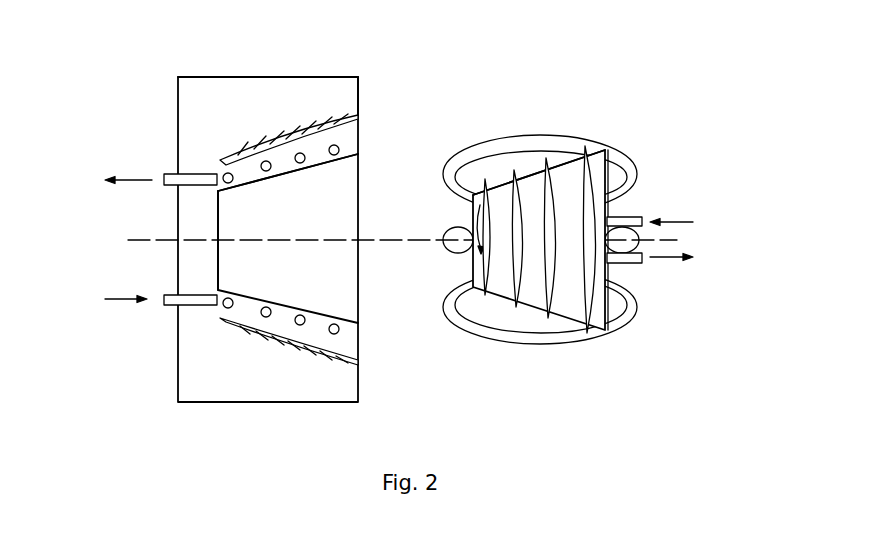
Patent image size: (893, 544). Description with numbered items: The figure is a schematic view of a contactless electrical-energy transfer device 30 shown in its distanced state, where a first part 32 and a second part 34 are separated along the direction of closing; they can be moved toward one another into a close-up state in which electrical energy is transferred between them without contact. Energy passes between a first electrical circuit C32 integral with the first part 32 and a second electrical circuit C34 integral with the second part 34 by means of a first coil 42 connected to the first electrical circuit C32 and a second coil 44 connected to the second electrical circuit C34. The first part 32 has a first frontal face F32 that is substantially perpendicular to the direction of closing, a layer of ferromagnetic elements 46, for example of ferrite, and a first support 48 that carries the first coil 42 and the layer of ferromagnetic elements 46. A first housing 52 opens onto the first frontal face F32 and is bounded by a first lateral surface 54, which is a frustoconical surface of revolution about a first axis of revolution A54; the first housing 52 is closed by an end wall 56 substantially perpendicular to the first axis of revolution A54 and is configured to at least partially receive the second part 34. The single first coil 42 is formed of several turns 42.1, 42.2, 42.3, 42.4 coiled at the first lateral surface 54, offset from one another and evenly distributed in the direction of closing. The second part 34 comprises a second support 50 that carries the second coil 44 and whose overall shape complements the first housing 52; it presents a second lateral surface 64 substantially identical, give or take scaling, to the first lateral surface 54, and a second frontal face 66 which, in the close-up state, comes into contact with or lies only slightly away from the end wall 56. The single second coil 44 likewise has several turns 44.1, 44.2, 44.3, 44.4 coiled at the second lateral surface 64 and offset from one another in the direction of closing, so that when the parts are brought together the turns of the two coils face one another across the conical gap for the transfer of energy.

The electrical-energy transfer device 30 is at (402, 83).
The first part 32 is at (168, 78).
The second part 34 is at (612, 348).
The first coil 42 is at (216, 150).
The turn of the first coil 42.1 is at (230, 173).
The turn of the first coil 42.2 is at (267, 161).
The turn of the first coil 42.3 is at (301, 153).
The turn of the first coil 42.4 is at (335, 145).
The second coil 44 is at (557, 150).
The turn of the second coil 44.1 is at (486, 294).
The turn of the second coil 44.2 is at (514, 308).
The turn of the second coil 44.3 is at (548, 320).
The turn of the second coil 44.4 is at (587, 333).
The layer of ferromagnetic elements 46 is at (250, 350).
The first support 48 is at (198, 88).
The second support 50 is at (570, 192).
The first housing 52 is at (288, 238).
The first lateral surface 54 is at (245, 200).
The end wall 56 is at (218, 253).
The second lateral surface 64 is at (523, 152).
The second frontal face 66 is at (458, 228).
The first axis of revolution A54 is at (153, 242).
The first electrical circuit C32 is at (131, 182).
The second electrical circuit C34 is at (676, 222).
The first frontal face F32 is at (360, 96).